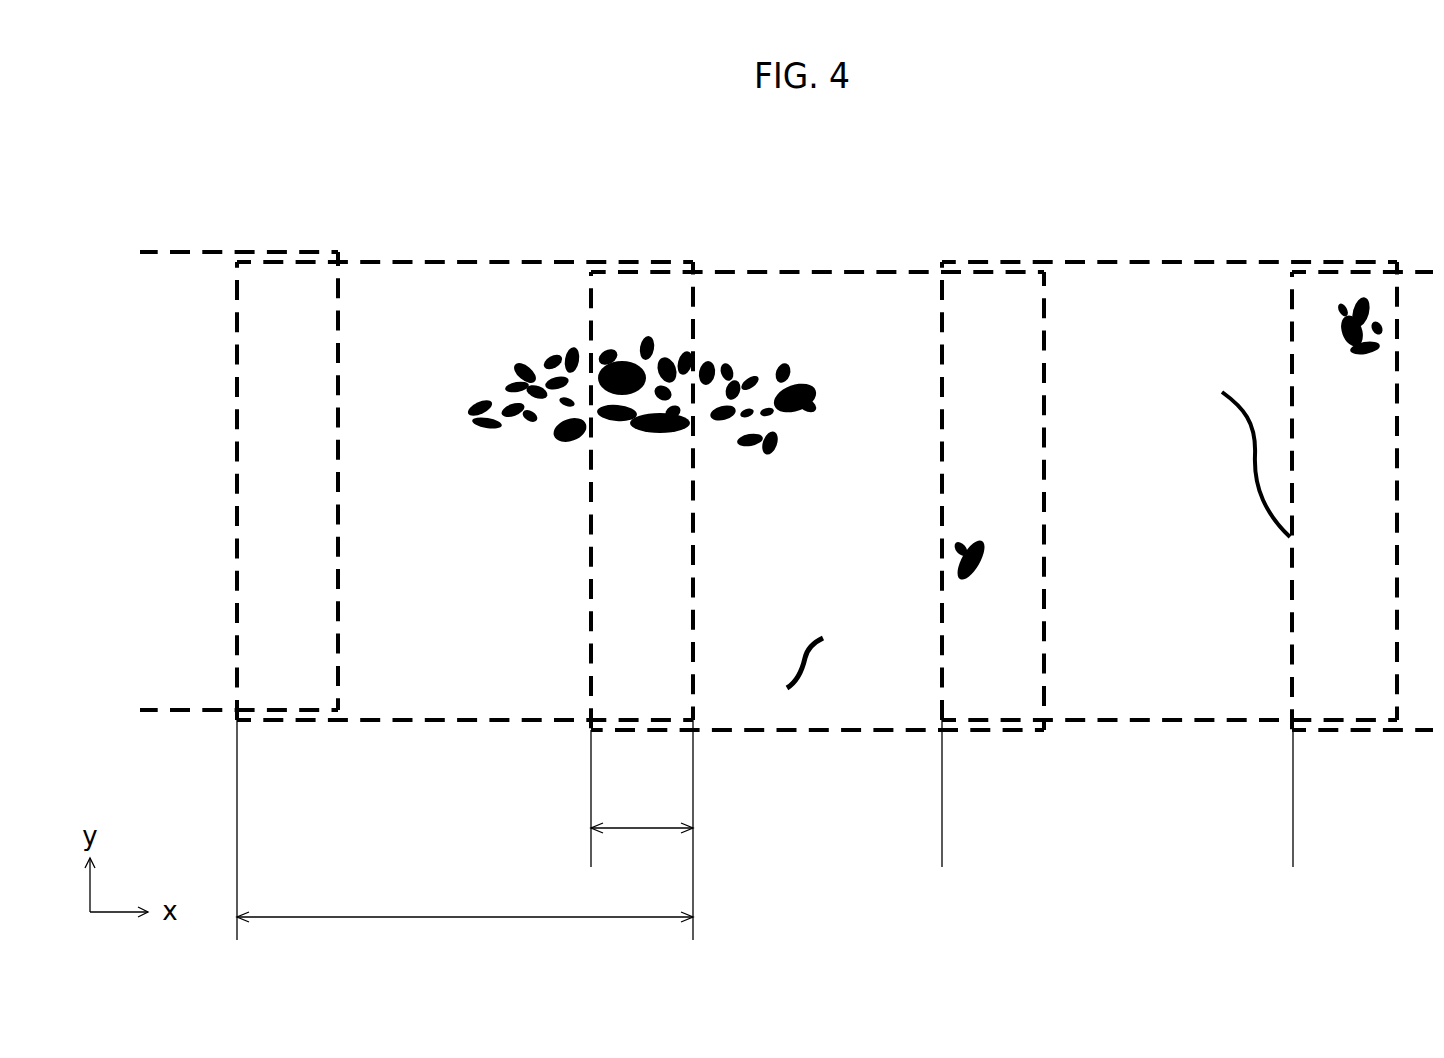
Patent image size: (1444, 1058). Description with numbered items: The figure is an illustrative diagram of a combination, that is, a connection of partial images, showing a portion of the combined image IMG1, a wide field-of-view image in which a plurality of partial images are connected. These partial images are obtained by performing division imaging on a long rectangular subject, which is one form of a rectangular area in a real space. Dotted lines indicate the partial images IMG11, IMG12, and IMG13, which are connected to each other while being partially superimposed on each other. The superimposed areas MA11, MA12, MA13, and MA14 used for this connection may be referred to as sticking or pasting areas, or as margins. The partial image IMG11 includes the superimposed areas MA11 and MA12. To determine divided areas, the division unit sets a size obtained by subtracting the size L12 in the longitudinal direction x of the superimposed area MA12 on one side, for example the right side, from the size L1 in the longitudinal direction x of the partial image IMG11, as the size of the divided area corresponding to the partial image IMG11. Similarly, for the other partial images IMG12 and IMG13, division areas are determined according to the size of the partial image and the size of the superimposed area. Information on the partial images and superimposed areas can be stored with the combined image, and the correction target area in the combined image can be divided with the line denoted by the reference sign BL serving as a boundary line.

The combined image IMG1 is at (1296, 186).
The partial image IMG11 is at (693, 255).
The partial image IMG12 is at (595, 255).
The partial image IMG13 is at (1397, 257).
The superimposed area MA11 is at (293, 686).
The superimposed area MA12 is at (644, 686).
The superimposed area MA13 is at (993, 686).
The superimposed area MA14 is at (1353, 686).
The boundary line BL is at (942, 813).
The size of partial image in longitudinal direction L1 is at (465, 840).
The size of superimposed area in longitudinal direction L12 is at (642, 845).